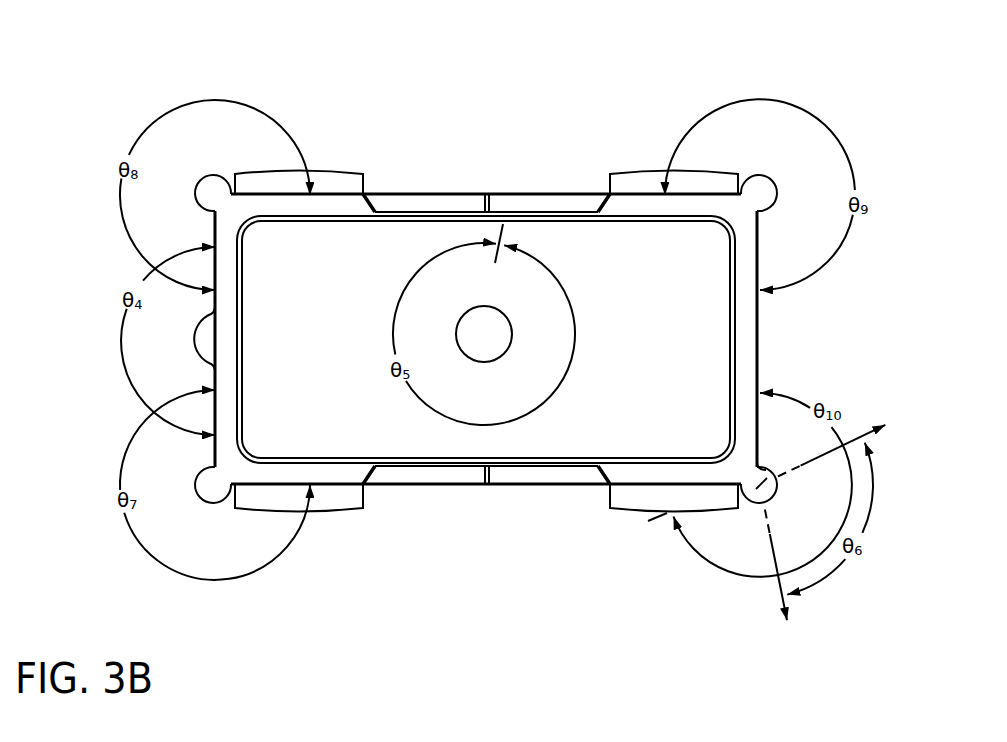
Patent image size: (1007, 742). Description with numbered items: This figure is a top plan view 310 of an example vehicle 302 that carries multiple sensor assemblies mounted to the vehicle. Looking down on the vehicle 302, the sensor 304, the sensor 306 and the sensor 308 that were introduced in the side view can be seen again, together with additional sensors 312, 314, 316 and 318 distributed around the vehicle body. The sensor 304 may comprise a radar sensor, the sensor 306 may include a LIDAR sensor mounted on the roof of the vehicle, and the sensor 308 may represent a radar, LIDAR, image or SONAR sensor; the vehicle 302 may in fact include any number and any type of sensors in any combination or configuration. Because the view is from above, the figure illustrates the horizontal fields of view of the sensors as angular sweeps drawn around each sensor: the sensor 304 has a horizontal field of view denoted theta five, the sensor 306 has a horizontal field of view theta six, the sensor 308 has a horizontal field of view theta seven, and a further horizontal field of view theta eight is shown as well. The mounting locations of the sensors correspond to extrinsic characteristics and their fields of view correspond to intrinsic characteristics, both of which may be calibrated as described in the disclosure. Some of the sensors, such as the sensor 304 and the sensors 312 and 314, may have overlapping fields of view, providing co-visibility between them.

The top plan view 310 is at (135, 80).
The vehicle 302 is at (448, 188).
The sensor 304 is at (183, 333).
The sensor 306 is at (502, 345).
The sensor 308 is at (778, 490).
The sensor 312 is at (197, 498).
The sensor 314 is at (203, 178).
The sensor 316 is at (777, 180).
The sensor 318 is at (768, 467).